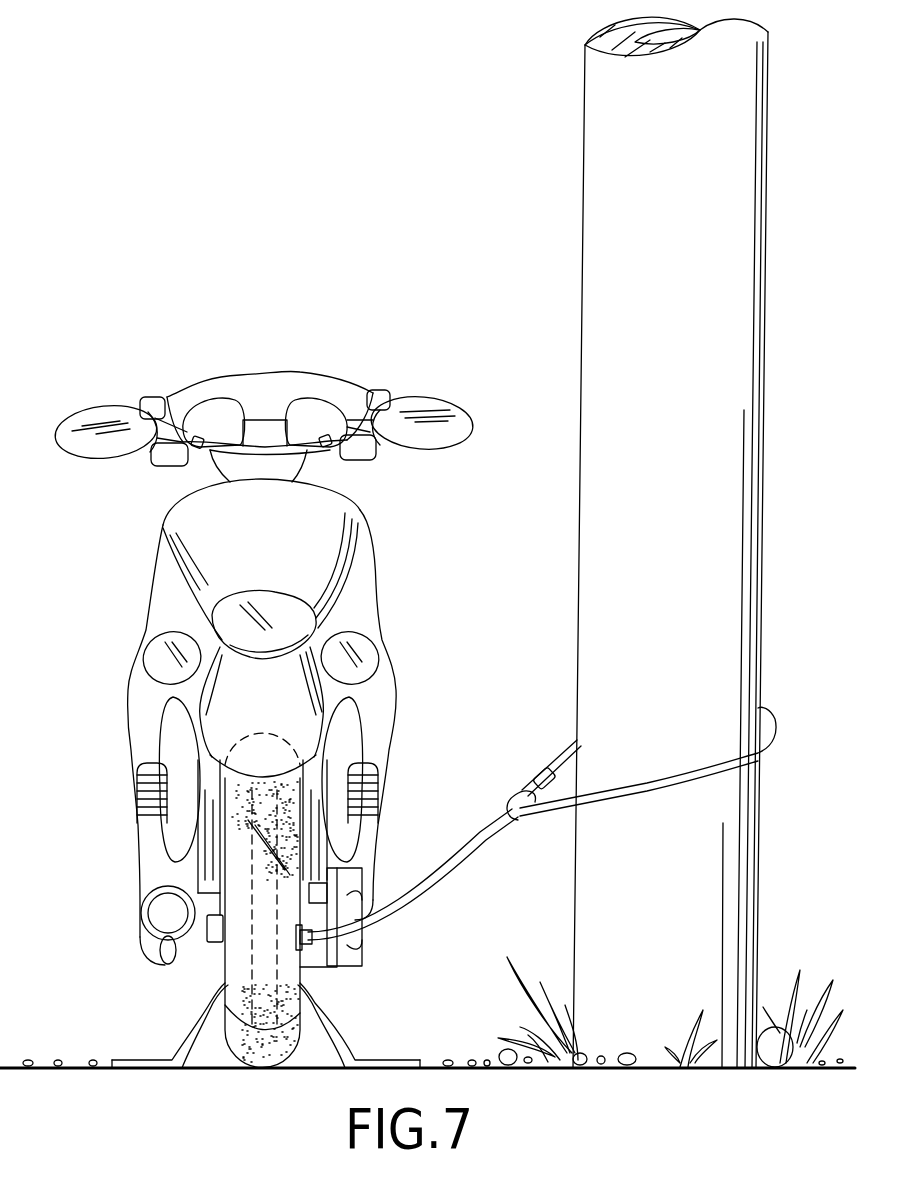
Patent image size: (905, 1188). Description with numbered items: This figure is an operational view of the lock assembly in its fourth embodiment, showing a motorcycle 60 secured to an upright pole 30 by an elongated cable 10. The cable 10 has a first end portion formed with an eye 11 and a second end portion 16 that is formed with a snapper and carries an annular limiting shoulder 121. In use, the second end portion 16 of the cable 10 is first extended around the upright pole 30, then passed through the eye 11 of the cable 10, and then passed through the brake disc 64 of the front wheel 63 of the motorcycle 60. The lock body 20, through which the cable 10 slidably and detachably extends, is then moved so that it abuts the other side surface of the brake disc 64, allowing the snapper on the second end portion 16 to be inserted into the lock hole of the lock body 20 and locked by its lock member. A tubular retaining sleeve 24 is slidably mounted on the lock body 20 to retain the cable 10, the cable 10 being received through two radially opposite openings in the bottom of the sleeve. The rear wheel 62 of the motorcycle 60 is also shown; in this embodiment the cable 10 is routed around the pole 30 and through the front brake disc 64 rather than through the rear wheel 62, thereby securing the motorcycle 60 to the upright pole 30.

The motorcycle 60 is at (345, 357).
The upright pole 30 is at (582, 607).
The elongated cable 10 is at (489, 843).
The eye 11 is at (522, 823).
The brake disc 64 is at (335, 900).
The annular limiting shoulder 121 is at (312, 937).
The second end portion 16 is at (305, 940).
The lock body 20 is at (290, 930).
The tubular retaining sleeve 24 is at (277, 948).
The front wheel 63 is at (237, 1003).
The rear wheel 62 is at (257, 1053).